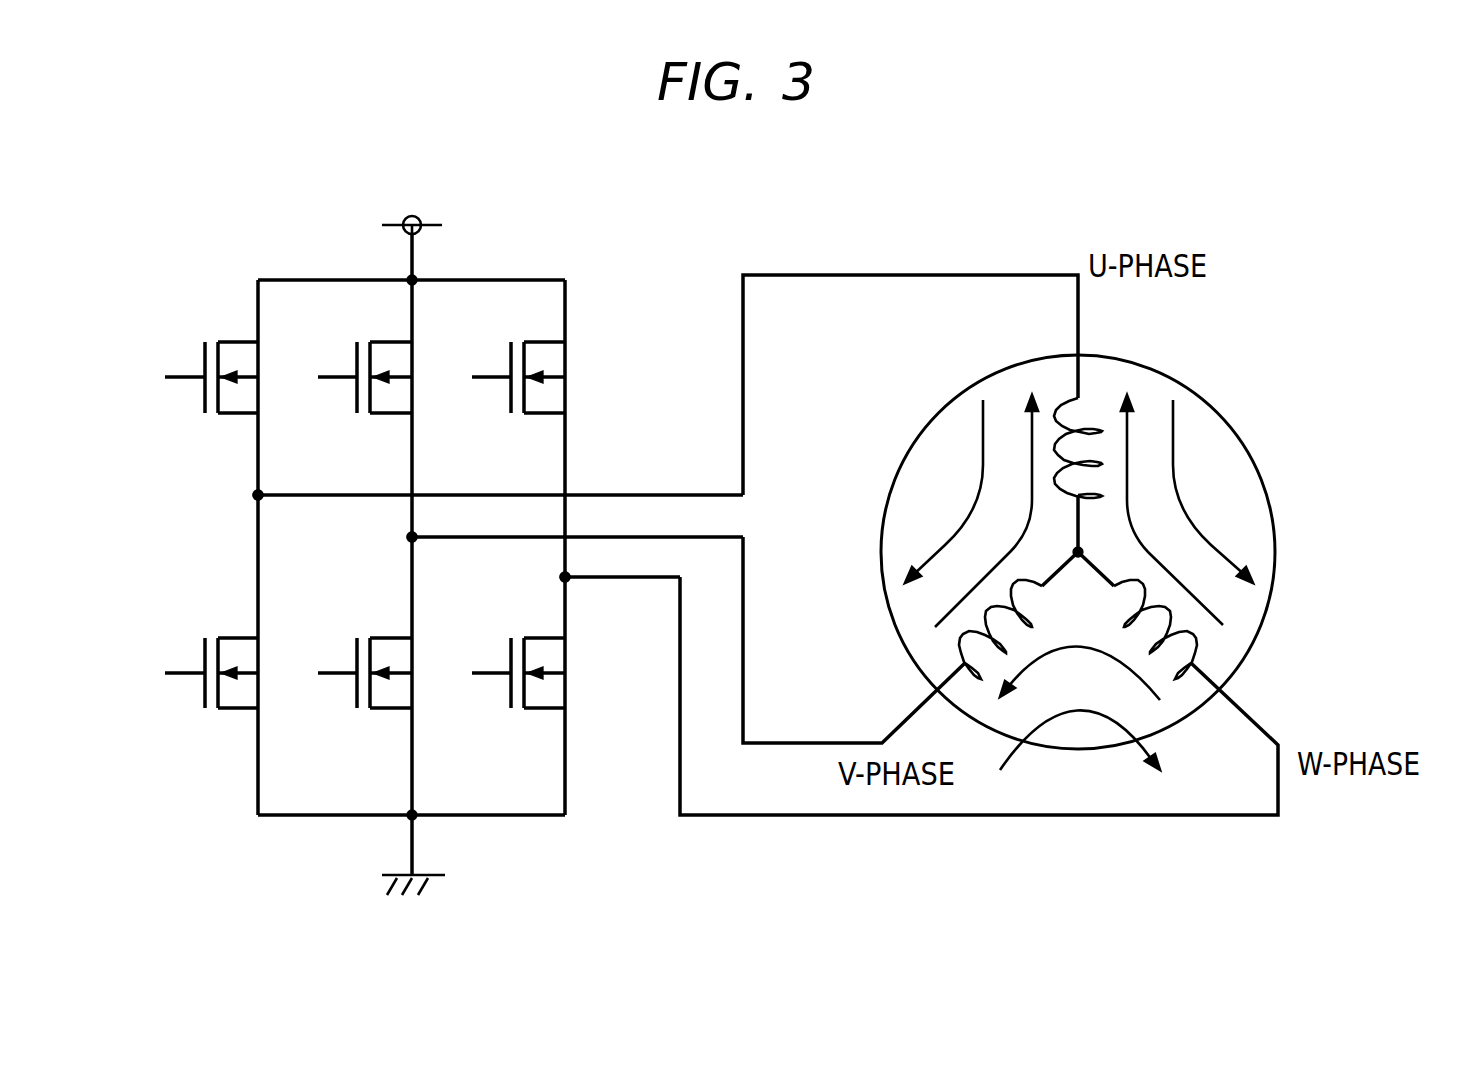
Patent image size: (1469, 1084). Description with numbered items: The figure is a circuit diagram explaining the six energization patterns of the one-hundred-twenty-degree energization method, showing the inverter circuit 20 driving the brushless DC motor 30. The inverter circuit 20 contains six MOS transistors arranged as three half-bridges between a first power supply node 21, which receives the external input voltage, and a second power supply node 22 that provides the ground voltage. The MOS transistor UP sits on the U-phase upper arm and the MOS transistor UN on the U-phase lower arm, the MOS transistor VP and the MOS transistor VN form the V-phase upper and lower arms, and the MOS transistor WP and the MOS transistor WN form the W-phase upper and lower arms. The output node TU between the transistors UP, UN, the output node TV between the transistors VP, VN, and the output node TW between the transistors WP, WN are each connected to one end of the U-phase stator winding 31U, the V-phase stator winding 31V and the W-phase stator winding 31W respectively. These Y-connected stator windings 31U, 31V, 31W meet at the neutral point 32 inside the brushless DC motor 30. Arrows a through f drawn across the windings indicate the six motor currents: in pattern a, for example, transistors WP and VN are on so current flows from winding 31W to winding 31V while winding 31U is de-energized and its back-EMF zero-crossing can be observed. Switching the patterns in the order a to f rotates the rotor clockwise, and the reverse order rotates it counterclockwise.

The inverter circuit 20 is at (612, 278).
The first power supply node 21 is at (403, 220).
The second power supply node 22 is at (430, 868).
The brushless DC motor 30 is at (1195, 387).
The U-phase stator winding 31U is at (1055, 437).
The V-phase stator winding 31V is at (975, 640).
The W-phase stator winding 31W is at (1190, 648).
The neutral point 32 is at (1078, 552).
The MOS transistor UP is at (237, 338).
The MOS transistor VP is at (390, 338).
The MOS transistor WP is at (543, 338).
The MOS transistor UN is at (240, 712).
The MOS transistor VN is at (393, 712).
The MOS transistor WN is at (543, 712).
The output node TU is at (256, 493).
The output node TV is at (407, 533).
The output node TW is at (567, 575).